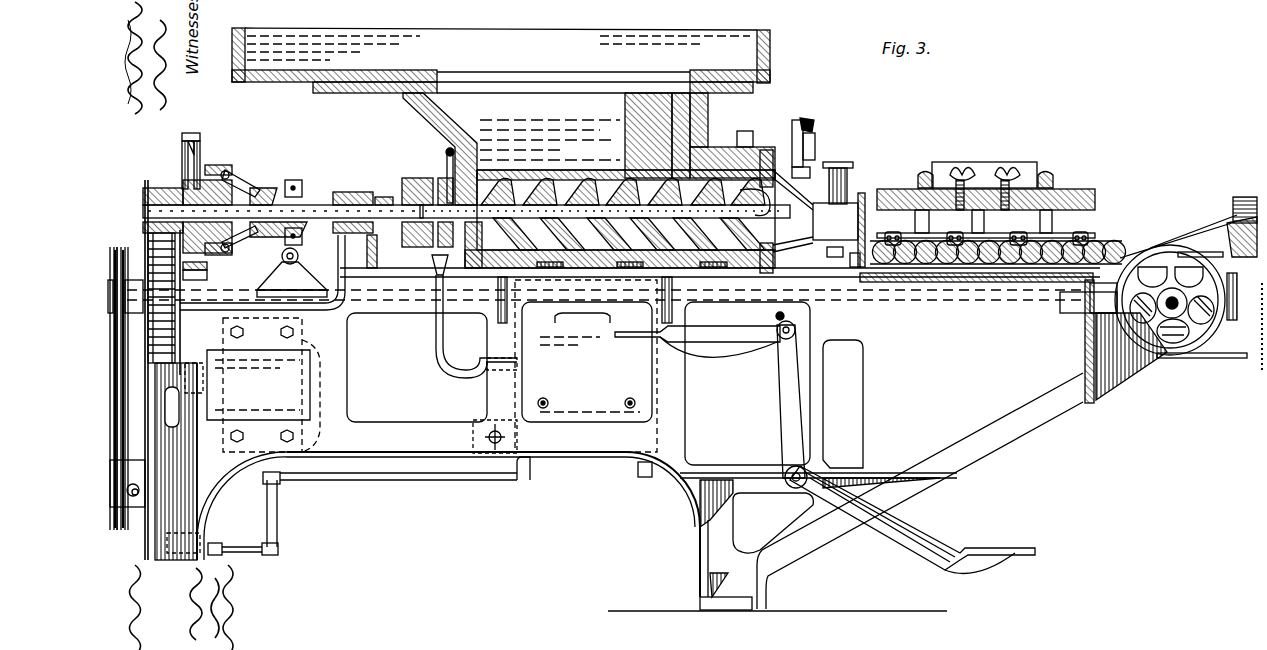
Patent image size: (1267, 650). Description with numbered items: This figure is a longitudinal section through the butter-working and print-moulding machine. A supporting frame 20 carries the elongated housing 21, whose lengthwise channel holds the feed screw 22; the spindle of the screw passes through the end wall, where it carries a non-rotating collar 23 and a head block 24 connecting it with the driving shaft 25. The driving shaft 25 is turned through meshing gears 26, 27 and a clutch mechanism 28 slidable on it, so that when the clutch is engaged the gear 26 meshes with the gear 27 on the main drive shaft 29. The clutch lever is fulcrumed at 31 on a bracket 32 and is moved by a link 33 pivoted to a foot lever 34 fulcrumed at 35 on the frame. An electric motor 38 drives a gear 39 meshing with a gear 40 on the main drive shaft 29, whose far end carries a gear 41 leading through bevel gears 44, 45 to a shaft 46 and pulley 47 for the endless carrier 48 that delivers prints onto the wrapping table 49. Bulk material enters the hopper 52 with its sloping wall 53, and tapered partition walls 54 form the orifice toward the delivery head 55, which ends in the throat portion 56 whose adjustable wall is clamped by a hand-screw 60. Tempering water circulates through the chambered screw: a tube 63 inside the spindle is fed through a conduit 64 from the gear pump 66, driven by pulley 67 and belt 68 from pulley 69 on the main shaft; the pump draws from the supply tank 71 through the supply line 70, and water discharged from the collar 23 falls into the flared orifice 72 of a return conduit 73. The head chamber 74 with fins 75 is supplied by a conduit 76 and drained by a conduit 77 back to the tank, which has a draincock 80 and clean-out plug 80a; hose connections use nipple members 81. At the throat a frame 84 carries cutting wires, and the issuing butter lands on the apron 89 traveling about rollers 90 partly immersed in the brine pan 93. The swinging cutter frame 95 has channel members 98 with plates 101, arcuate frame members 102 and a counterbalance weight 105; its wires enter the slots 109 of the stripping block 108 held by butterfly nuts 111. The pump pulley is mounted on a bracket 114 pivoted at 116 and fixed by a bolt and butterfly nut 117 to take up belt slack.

The supporting frame 20 is at (683, 493).
The housing 21 is at (493, 267).
The feed screw 22 is at (532, 200).
The non-rotating collar 23 is at (440, 177).
The head block 24 is at (402, 183).
The driving shaft 25 is at (317, 207).
The gear 26 is at (200, 137).
The gear 27 is at (207, 287).
The clutch mechanism 28 is at (260, 180).
The main drive shaft 29 is at (218, 296).
The fulcrum 31 is at (282, 256).
The bracket 32 is at (298, 278).
The link 33 is at (743, 338).
The foot lever 34 is at (777, 427).
The fulcrum 35 is at (797, 485).
The electric motor 38 is at (323, 412).
The gear 39 is at (179, 418).
The gear 40 is at (175, 343).
The gear 41 is at (1085, 328).
The bevel gear 44 is at (1137, 337).
The bevel gear 45 is at (1200, 323).
The shaft 46 is at (1167, 312).
The pulley 47 is at (1197, 247).
The endless carrier 48 is at (1232, 240).
The wrapping table 49 is at (1233, 203).
The hopper 52 is at (423, 53).
The sloping wall 53 is at (463, 132).
The partition walls 54 is at (630, 163).
The delivery head 55 is at (818, 172).
The throat portion 56 is at (830, 213).
The hand-screw 60 is at (847, 168).
The tube 63 is at (568, 213).
The conduit 64 is at (447, 152).
The gear pump 66 is at (212, 528).
The pulley 67 is at (127, 457).
The belt 68 is at (118, 423).
The pulley 69 is at (116, 255).
The supply line 70 is at (278, 532).
The supply tank 71 is at (562, 415).
The flared orifice 72 is at (433, 263).
The conduit 73 is at (430, 340).
The chamber 74 is at (792, 157).
The fins 75 is at (810, 163).
The conduit 76 is at (810, 111).
The conduit 77 is at (718, 377).
The draincock 80 is at (487, 442).
The clean out plug 80a is at (640, 470).
The nipple member 81 is at (817, 128).
The frame 84 is at (830, 298).
The apron 89 is at (986, 190).
The rollers 90 is at (886, 265).
The brine pan 93 is at (1117, 258).
The cutter frame 95 is at (1053, 232).
The channel members 98 is at (1077, 240).
The plates 101 is at (1087, 233).
The arcuate frame members 102 is at (923, 170).
The counterbalance weight 105 is at (1040, 162).
The stripping block 108 is at (1097, 193).
The slots 109 is at (1100, 183).
The butterfly nuts 111 is at (1000, 170).
The bracket 114 is at (147, 530).
The pivot 116 is at (135, 492).
The bolt and butterfly nut 117 is at (133, 490).